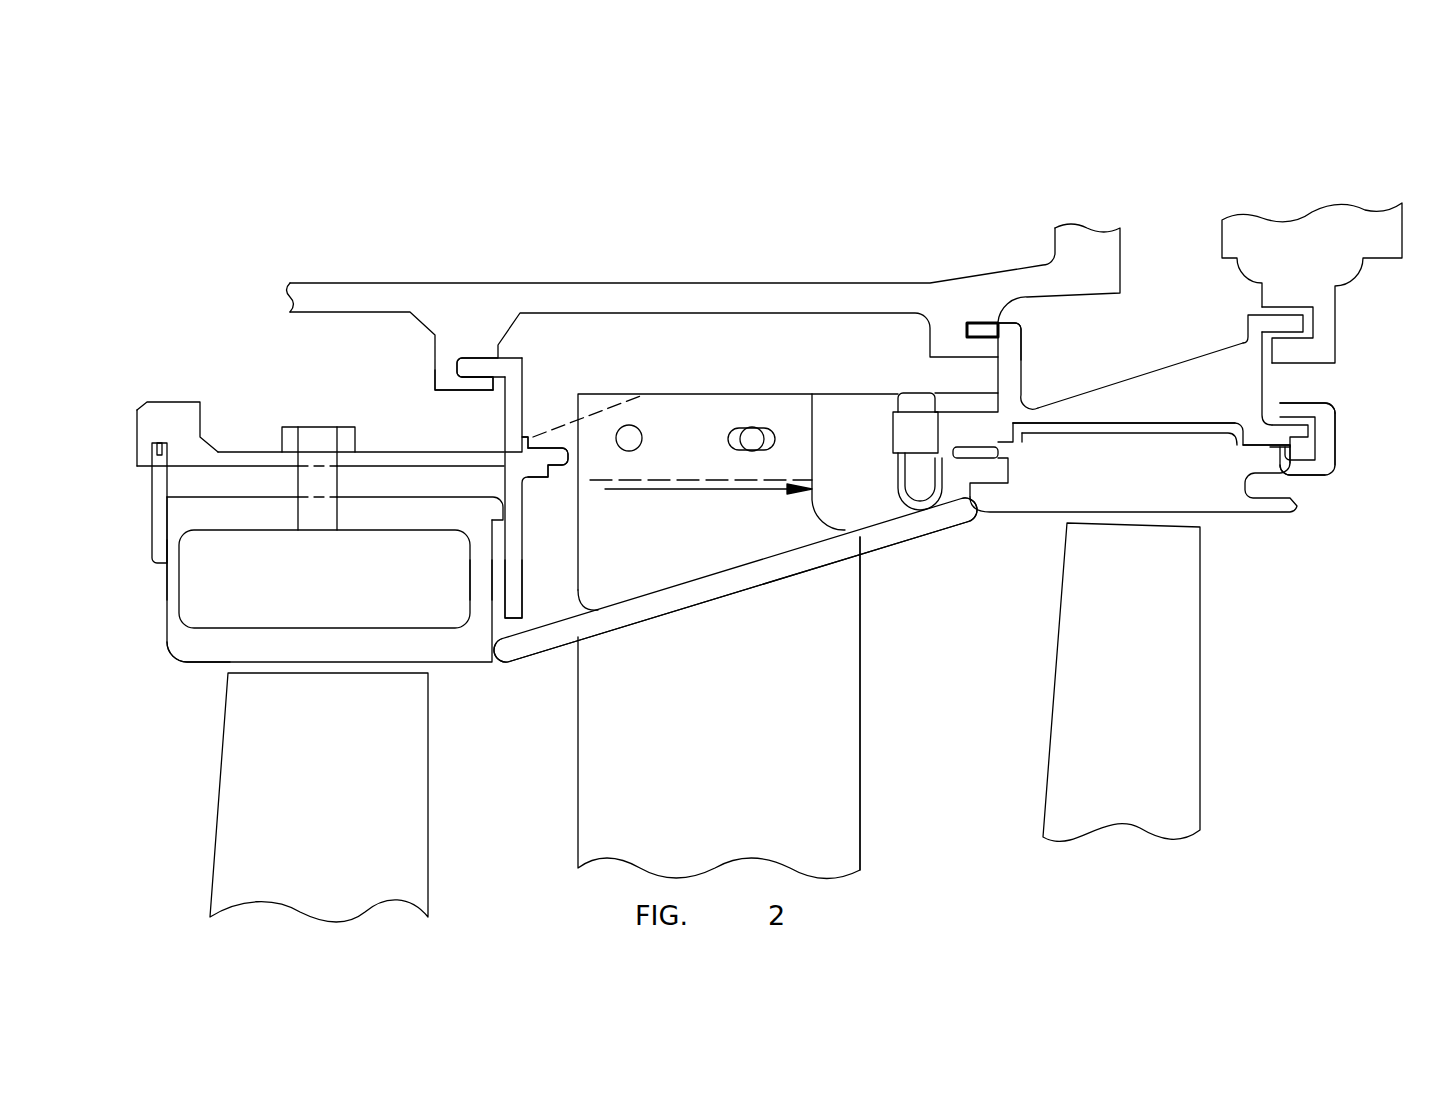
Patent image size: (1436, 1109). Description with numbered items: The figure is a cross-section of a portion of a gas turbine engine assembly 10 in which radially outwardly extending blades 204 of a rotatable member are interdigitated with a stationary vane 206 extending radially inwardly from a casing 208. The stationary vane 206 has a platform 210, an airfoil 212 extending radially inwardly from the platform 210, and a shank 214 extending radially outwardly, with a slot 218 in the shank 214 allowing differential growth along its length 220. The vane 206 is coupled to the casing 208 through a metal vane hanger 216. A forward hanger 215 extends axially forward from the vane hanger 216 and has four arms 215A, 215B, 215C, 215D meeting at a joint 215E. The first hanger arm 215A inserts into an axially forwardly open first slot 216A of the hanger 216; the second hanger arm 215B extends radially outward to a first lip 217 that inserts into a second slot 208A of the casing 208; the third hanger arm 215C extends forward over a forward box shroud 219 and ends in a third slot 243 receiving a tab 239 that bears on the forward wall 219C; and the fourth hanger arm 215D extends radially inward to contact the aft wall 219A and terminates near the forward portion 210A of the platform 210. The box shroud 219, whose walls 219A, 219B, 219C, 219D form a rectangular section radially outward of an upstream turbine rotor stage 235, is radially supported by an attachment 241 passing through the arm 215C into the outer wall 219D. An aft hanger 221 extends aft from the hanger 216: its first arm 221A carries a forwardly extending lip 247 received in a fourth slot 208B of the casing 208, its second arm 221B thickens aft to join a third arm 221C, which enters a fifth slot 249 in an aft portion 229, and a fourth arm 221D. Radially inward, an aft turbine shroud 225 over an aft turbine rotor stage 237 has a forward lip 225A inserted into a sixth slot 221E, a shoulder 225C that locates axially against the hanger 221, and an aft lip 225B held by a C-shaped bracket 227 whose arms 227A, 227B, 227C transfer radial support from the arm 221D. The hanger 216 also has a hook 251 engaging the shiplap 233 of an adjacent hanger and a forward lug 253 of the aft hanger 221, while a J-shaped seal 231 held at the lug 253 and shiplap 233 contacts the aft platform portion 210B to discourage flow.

The gas turbine engine assembly 10 is at (943, 182).
The blades 204 is at (1082, 777).
The stationary vane 206 is at (715, 731).
The casing 208 is at (715, 283).
The second slot 208A is at (445, 369).
The fourth slot 208B is at (983, 340).
The platform 210 is at (918, 535).
The axially forward portion of platform 210A is at (532, 652).
The axially aft portion of platform 210B is at (878, 547).
The airfoil 212 is at (862, 710).
The shank 214 is at (620, 557).
The forward hanger 215 is at (382, 422).
The first hanger arm 215A is at (547, 468).
The second hanger arm 215B is at (523, 378).
The third hanger arm 215C is at (243, 448).
The fourth hanger arm 215D is at (517, 585).
The joint 215E is at (513, 462).
The vane hanger 216 is at (535, 437).
The first slot 216A is at (567, 437).
The first lip 217 is at (480, 363).
The slot 218 is at (770, 433).
The forward box shroud 219 is at (180, 622).
The axially aft wall 219A is at (487, 609).
The wall of forward box shroud 219B is at (208, 640).
The axially forward wall 219C is at (167, 580).
The radially outer wall 219D is at (270, 520).
The length of shank 220 is at (670, 490).
The aft hanger 221 is at (1235, 383).
The first aft hanger arm 221A is at (1012, 343).
The second aft hanger arm 221B is at (1210, 362).
The third aft hanger arm 221C is at (1282, 323).
The fourth aft hanger arm 221D is at (1293, 428).
The sixth slot 221E is at (973, 450).
The aft turbine shroud 225 is at (1195, 510).
The axially forward lip 225A is at (1003, 450).
The axially aft extending lip 225B is at (1280, 452).
The radially outboard shoulder 225C is at (1262, 405).
The bracket 227 is at (1332, 473).
The first axially forward extending arm 227A is at (1305, 470).
The central radially outward extending arm 227B is at (1338, 423).
The second axially forward extending arm 227C is at (1308, 405).
The aft portion 229 is at (1297, 243).
The J-shaped seal 231 is at (960, 517).
The shiplap 233 is at (913, 432).
The upstream turbine rotor stage 235 is at (350, 793).
The aft turbine rotor stage 237 is at (1145, 712).
The tab 239 is at (160, 515).
The attachment 241 is at (297, 423).
The third slot 243 is at (153, 453).
The forwardly extending lip 247 is at (985, 323).
The fifth slot 249 is at (1307, 323).
The hook 251 is at (913, 402).
The lug 253 is at (913, 472).